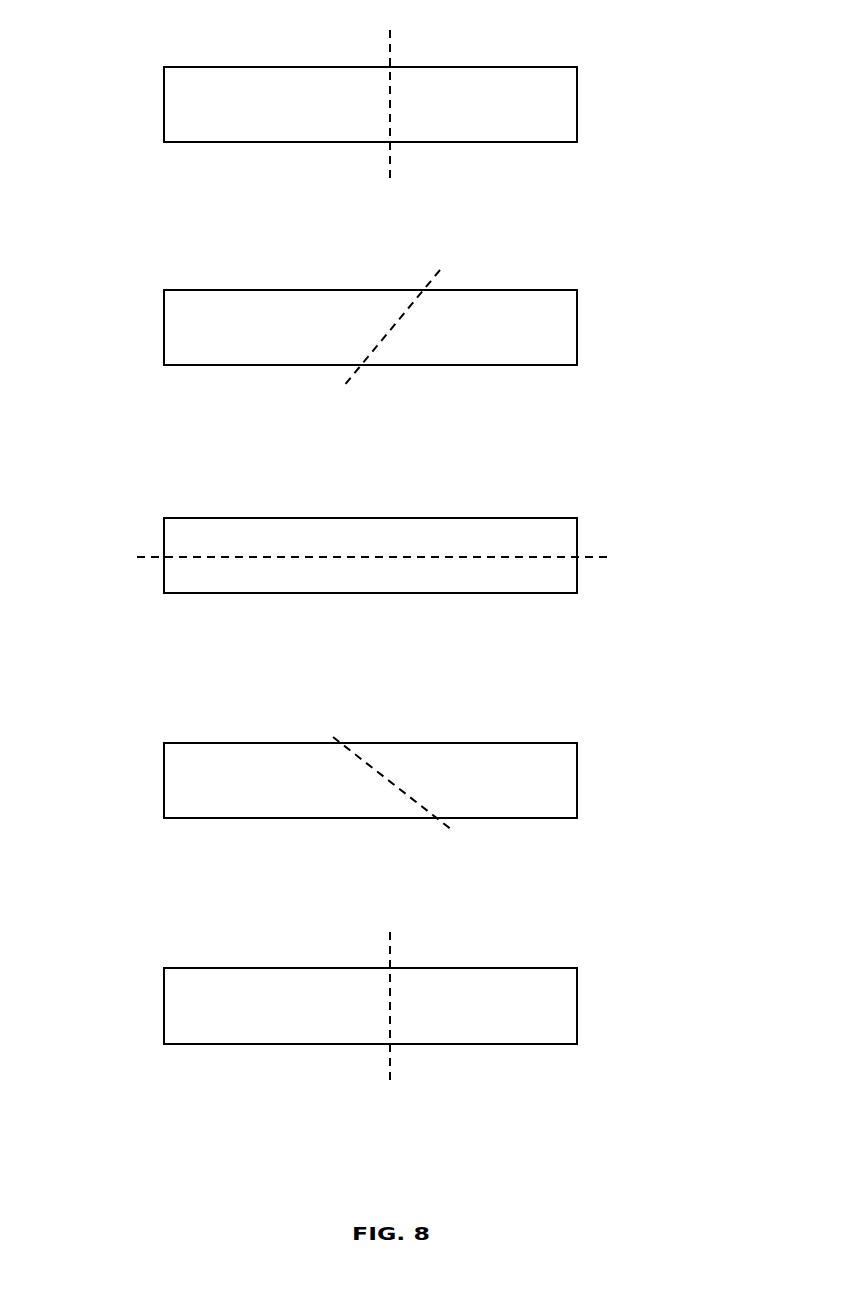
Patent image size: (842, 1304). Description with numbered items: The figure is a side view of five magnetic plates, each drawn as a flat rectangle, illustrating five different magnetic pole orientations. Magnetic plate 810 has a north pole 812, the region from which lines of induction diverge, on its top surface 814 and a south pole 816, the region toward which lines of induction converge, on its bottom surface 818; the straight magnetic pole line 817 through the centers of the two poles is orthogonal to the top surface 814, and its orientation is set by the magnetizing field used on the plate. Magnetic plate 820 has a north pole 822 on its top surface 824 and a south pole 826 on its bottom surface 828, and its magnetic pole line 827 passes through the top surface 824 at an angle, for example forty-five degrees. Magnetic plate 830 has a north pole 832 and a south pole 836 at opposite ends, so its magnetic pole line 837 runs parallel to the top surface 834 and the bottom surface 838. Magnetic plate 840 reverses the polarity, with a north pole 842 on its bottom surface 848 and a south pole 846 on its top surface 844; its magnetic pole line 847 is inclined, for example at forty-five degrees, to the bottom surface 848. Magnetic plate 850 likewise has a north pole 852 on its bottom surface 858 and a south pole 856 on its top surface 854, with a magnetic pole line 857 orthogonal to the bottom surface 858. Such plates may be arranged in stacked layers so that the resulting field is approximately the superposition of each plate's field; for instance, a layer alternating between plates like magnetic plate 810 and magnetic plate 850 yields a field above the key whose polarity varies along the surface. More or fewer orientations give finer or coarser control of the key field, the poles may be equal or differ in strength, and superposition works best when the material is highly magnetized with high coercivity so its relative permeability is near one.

The magnetic plate 810 is at (164, 95).
The north pole 812 is at (390, 67).
The top surface 814 is at (503, 58).
The south pole 816 is at (390, 142).
The magnetic pole line 817 is at (389, 104).
The bottom surface 818 is at (503, 152).
The magnetic plate 820 is at (164, 338).
The north pole 822 is at (423, 290).
The top surface 824 is at (540, 281).
The south pole 826 is at (358, 366).
The magnetic pole line 827 is at (385, 332).
The bottom surface 828 is at (540, 374).
The magnetic plate 830 is at (164, 530).
The north pole 832 is at (578, 555).
The top surface 834 is at (545, 509).
The south pole 836 is at (165, 558).
The magnetic pole line 837 is at (355, 557).
The bottom surface 838 is at (545, 602).
The magnetic plate 840 is at (164, 775).
The north pole 842 is at (433, 818).
The top surface 844 is at (553, 734).
The south pole 846 is at (340, 742).
The magnetic pole line 847 is at (373, 768).
The bottom surface 848 is at (553, 827).
The magnetic plate 850 is at (164, 1003).
The north pole 852 is at (390, 1044).
The top surface 854 is at (547, 959).
The south pole 856 is at (390, 968).
The magnetic pole line 857 is at (389, 1005).
The bottom surface 858 is at (547, 1053).